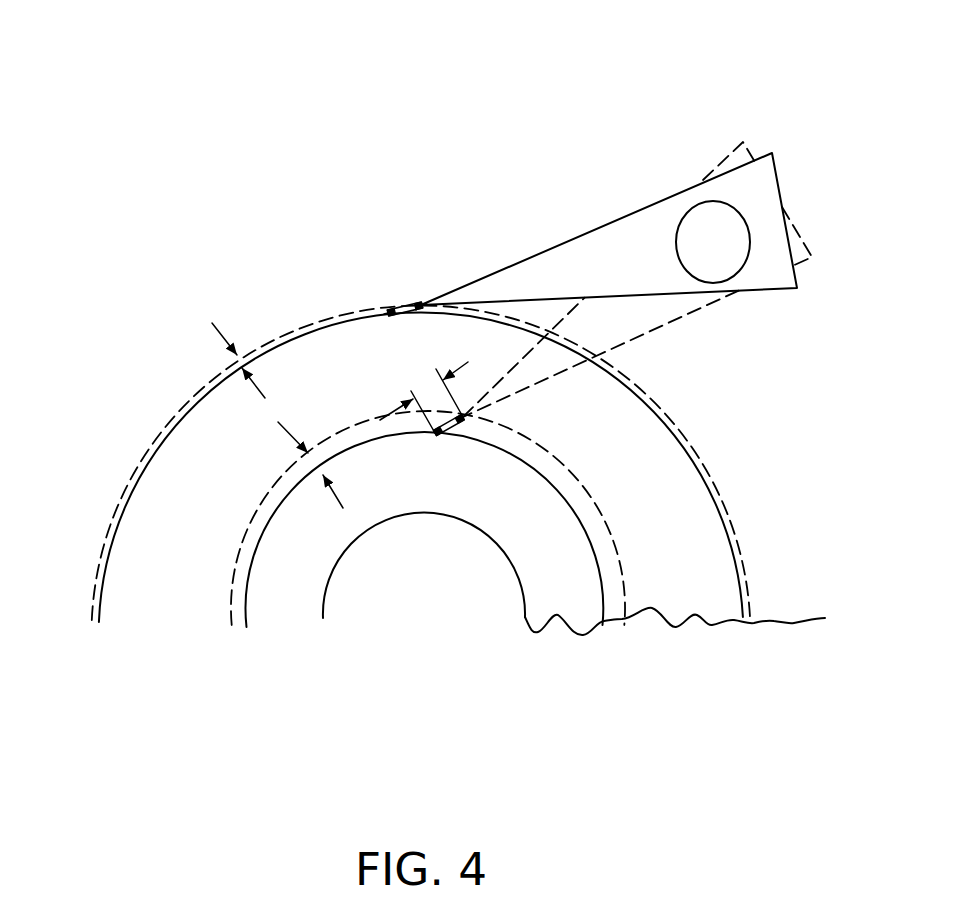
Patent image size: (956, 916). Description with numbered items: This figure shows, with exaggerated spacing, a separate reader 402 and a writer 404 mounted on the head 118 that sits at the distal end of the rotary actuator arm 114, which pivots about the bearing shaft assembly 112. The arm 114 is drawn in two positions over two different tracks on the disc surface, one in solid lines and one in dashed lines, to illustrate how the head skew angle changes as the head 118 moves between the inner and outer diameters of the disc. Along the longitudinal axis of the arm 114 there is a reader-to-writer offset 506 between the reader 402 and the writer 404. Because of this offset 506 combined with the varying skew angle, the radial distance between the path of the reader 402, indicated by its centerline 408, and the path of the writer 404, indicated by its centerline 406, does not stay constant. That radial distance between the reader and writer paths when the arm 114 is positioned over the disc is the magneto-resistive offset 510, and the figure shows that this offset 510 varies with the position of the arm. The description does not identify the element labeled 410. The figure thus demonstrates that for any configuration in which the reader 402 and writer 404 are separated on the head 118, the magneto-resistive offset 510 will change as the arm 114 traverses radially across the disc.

The bearing shaft assembly 112 is at (713, 240).
The rotary actuator arm 114 is at (622, 220).
The head 118 is at (405, 308).
The reader 402 is at (420, 303).
The writer 404 is at (382, 310).
The centerline 406 is at (96, 592).
The centerline 408 is at (93, 610).
The inner layer 410 is at (303, 462).
The reader-to-writer offset 506 is at (438, 385).
The magneto-resistive offset (MRO) 510 is at (233, 360).